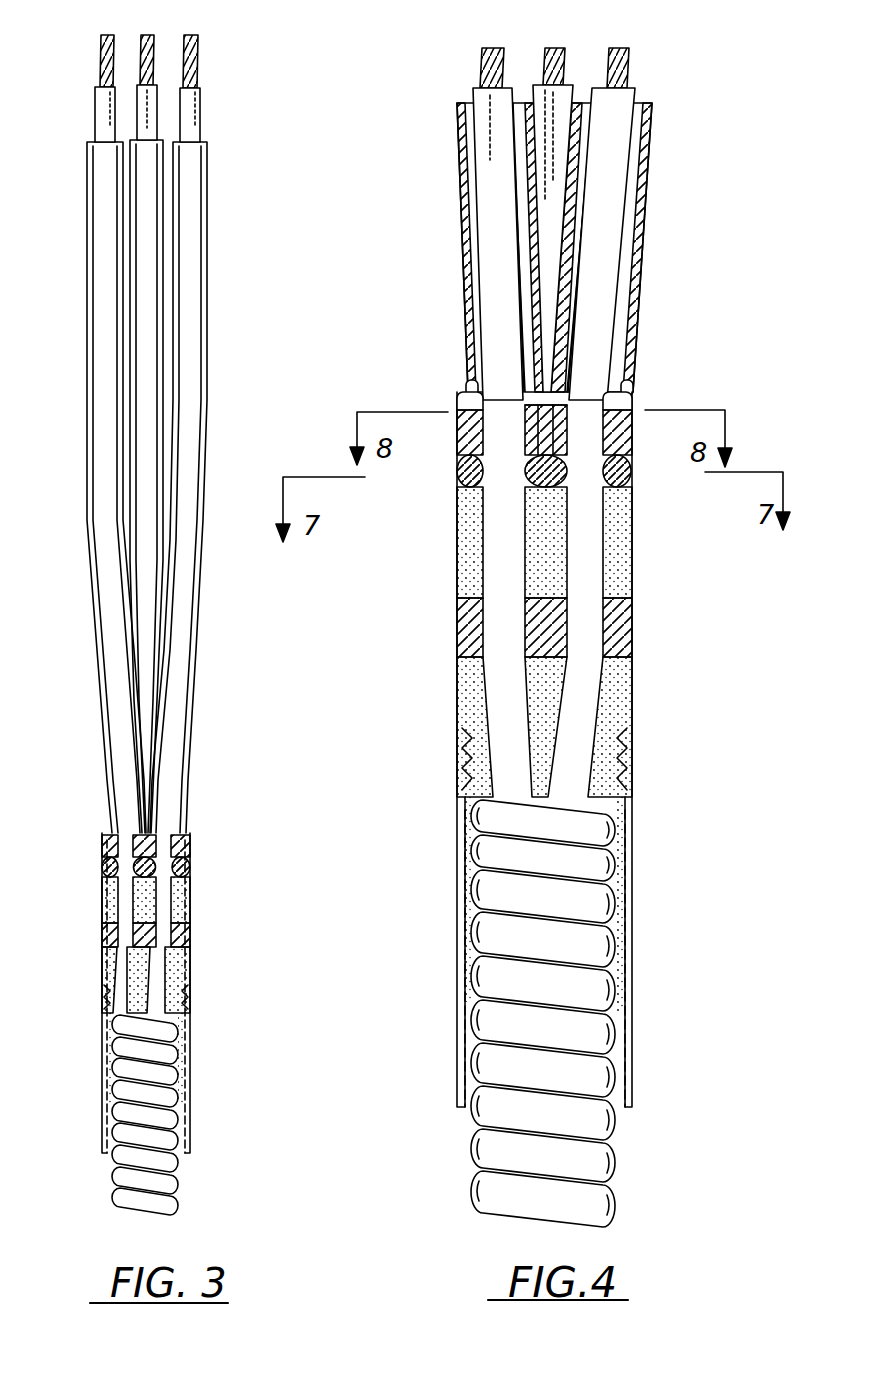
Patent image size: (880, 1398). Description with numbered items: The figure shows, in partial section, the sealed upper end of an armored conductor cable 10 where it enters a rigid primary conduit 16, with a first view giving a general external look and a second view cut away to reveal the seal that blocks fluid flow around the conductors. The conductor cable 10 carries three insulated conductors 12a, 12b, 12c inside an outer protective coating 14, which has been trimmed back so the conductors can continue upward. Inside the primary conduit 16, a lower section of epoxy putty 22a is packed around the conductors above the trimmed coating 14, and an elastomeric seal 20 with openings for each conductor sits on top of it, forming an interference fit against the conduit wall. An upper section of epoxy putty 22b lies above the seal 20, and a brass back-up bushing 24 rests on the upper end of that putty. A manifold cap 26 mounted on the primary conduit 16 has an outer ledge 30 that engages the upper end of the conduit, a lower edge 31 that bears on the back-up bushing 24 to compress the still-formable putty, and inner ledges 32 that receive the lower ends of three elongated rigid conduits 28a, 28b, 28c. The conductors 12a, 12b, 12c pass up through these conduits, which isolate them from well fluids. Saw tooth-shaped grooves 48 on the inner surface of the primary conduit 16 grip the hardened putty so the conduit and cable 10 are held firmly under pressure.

In FIG. 3, the conductor cable 10 is at (182, 1184).
In FIG. 4, the conductor cable 10 is at (622, 1149).
In FIG. 3, the insulated conductor 12a is at (103, 112).
In FIG. 4, the insulated conductor 12a is at (490, 122).
In FIG. 3, the insulated conductor 12b is at (150, 106).
In FIG. 4, the insulated conductor 12b is at (542, 86).
In FIG. 3, the insulated conductor 12c is at (192, 121).
In FIG. 4, the insulated conductor 12c is at (610, 140).
In FIG. 3, the outer protective coating 14 is at (165, 1020).
In FIG. 4, the outer protective coating 14 is at (606, 822).
In FIG. 3, the primary conduit 16 is at (190, 1102).
In FIG. 4, the primary conduit 16 is at (634, 957).
In FIG. 3, the elastomeric seal 20 is at (182, 932).
In FIG. 4, the elastomeric seal 20 is at (625, 622).
In FIG. 3, the epoxy putty 22a is at (190, 972).
In FIG. 4, the epoxy putty 22a is at (622, 712).
In FIG. 3, the epoxy putty 22b is at (190, 876).
In FIG. 4, the epoxy putty 22b is at (617, 538).
In FIG. 4, the back-up bushing 24 is at (622, 468).
In FIG. 4, the manifold cap 26 is at (633, 405).
In FIG. 3, the elongated rigid conduit 28a is at (102, 388).
In FIG. 4, the elongated rigid conduit 28a is at (462, 226).
In FIG. 3, the elongated rigid conduit 28b is at (150, 335).
In FIG. 4, the elongated rigid conduit 28b is at (560, 92).
In FIG. 3, the elongated rigid conduit 28c is at (195, 455).
In FIG. 4, the elongated rigid conduit 28c is at (645, 258).
In FIG. 4, the outer ledge 30 is at (465, 422).
In FIG. 4, the lower edge 31 is at (470, 460).
In FIG. 4, the inner ledges 32 is at (628, 372).
In FIG. 4, the saw tooth-shaped grooves 48 is at (636, 790).